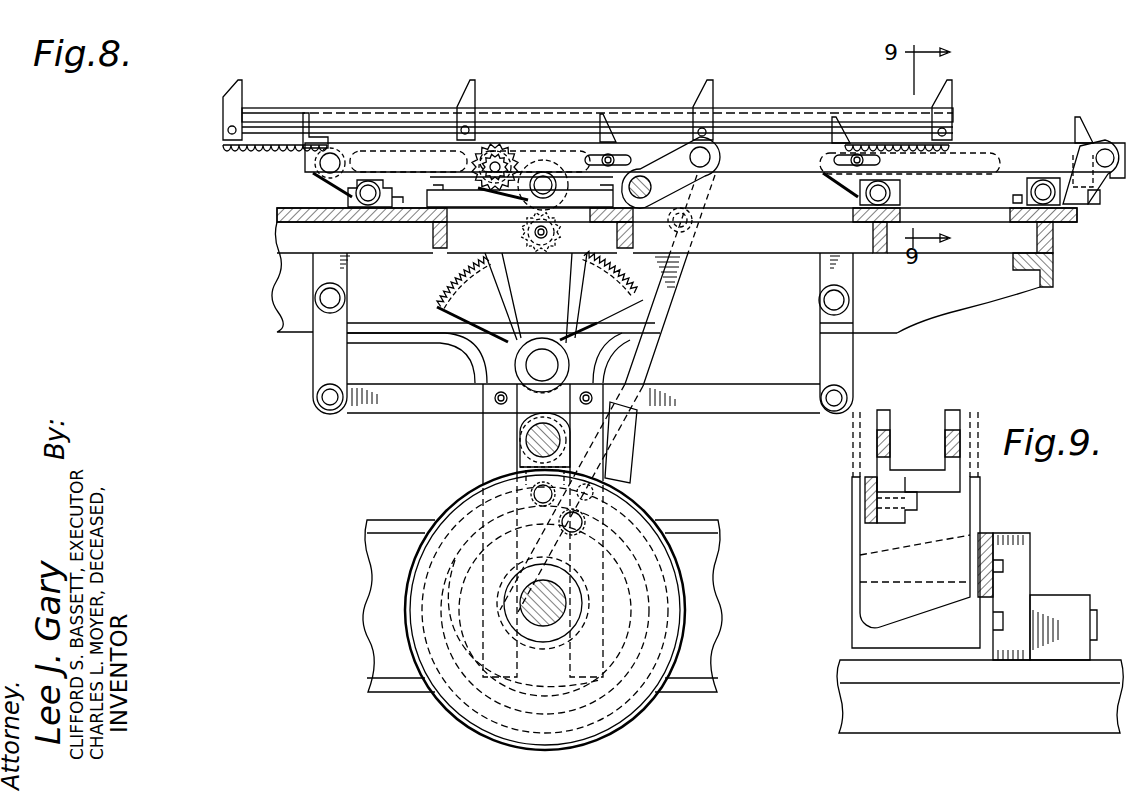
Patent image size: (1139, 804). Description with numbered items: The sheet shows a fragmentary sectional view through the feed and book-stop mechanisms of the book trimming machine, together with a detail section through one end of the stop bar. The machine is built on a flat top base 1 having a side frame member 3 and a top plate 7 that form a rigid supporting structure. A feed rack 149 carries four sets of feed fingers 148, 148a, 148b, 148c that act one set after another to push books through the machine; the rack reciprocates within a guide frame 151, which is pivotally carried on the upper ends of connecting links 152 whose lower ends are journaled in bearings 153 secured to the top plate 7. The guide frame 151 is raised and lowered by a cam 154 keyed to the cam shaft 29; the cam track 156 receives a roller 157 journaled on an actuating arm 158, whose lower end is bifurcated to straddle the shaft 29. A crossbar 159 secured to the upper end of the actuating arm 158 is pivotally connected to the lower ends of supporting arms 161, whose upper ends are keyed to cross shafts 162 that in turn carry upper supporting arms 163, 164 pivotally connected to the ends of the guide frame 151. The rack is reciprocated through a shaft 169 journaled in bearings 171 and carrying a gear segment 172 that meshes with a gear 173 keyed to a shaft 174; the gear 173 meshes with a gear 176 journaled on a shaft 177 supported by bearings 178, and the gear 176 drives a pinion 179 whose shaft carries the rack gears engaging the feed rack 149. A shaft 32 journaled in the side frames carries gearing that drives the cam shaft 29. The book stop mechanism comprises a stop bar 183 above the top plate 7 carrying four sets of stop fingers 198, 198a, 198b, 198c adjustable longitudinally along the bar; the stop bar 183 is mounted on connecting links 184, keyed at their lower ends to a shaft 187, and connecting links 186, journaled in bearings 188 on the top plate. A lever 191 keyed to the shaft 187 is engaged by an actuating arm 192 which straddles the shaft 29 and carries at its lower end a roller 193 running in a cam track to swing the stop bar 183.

In FIG. 8, the flat top base 1 is at (1066, 280).
In FIG. 8, the side frame member 3 is at (275, 266).
In FIG. 8, the top plate 7 is at (275, 215).
In FIG. 9, the top plate 7 is at (845, 670).
In FIG. 8, the cam shaft 29 is at (525, 595).
In FIG. 8, the shaft 32 is at (530, 442).
In FIG. 8, the feed fingers 148 is at (228, 108).
In FIG. 8, the feed fingers 148a is at (465, 80).
In FIG. 8, the feed fingers 148b is at (706, 84).
In FIG. 8, the feed fingers 148c is at (950, 101).
In FIG. 9, the feed fingers 148c is at (929, 428).
In FIG. 8, the feed rack 149 is at (248, 151).
In FIG. 9, the feed rack 149 is at (866, 470).
In FIG. 8, the guide frame 151 is at (366, 108).
In FIG. 8, the connecting link 152 is at (312, 186).
In FIG. 8, the bearing 153 is at (395, 170).
In FIG. 8, the cam 154 is at (480, 727).
In FIG. 8, the track 156 is at (468, 518).
In FIG. 8, the roller 157 is at (483, 477).
In FIG. 8, the actuating arm 158 is at (492, 426).
In FIG. 8, the crossbar 159 is at (686, 383).
In FIG. 8, the supporting arm 161 is at (322, 357).
In FIG. 8, the cross shaft 162 is at (318, 297).
In FIG. 8, the upper supporting arm 163 is at (345, 262).
In FIG. 8, the upper supporting arm 164 is at (825, 262).
In FIG. 8, the shaft 169 is at (543, 358).
In FIG. 8, the bearing 171 is at (497, 288).
In FIG. 8, the gear segment 172 is at (437, 306).
In FIG. 8, the gear 173 is at (555, 262).
In FIG. 8, the shaft 174 is at (525, 250).
In FIG. 8, the gear 176 is at (530, 232).
In FIG. 8, the shaft 177 is at (545, 175).
In FIG. 8, the bearing 178 is at (520, 157).
In FIG. 8, the driven pinion 179 is at (470, 167).
In FIG. 8, the stop bar 183 is at (982, 149).
In FIG. 9, the stop bar 183 is at (987, 540).
In FIG. 8, the connecting link 184 is at (714, 158).
In FIG. 8, the connecting link 186 is at (1103, 184).
In FIG. 9, the connecting link 186 is at (1030, 560).
In FIG. 8, the shaft 187 is at (690, 186).
In FIG. 8, the bearing 188 is at (1013, 196).
In FIG. 9, the bearing 188 is at (1073, 586).
In FIG. 8, the lever 191 is at (695, 228).
In FIG. 8, the actuating arm 192 is at (675, 285).
In FIG. 8, the roller 193 is at (635, 488).
In FIG. 8, the stop fingers 198 is at (311, 113).
In FIG. 8, the stop fingers 198a is at (606, 115).
In FIG. 8, the stop fingers 198b is at (848, 97).
In FIG. 8, the stop fingers 198c is at (1096, 108).
In FIG. 9, the stop fingers 198c is at (982, 500).